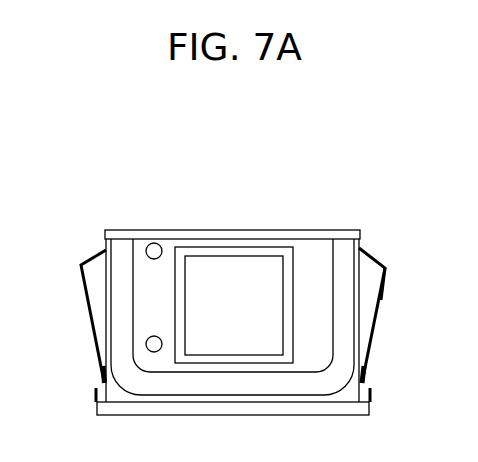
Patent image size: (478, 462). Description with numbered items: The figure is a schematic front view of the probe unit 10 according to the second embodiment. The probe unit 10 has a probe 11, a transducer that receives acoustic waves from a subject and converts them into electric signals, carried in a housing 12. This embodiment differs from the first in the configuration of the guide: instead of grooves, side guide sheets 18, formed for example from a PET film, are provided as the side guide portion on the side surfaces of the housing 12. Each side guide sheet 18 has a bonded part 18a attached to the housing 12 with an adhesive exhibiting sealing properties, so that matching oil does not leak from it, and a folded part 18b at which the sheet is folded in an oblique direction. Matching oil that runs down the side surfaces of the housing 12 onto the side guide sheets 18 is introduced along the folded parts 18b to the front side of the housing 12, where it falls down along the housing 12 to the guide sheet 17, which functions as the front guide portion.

The probe unit 10 is at (277, 215).
The probe 11 is at (223, 283).
The housing 12 is at (320, 263).
The guide sheet 17 is at (368, 413).
The side guide sheet 18 is at (98, 323).
The bonded part 18a is at (105, 365).
The folded part 18b is at (362, 287).